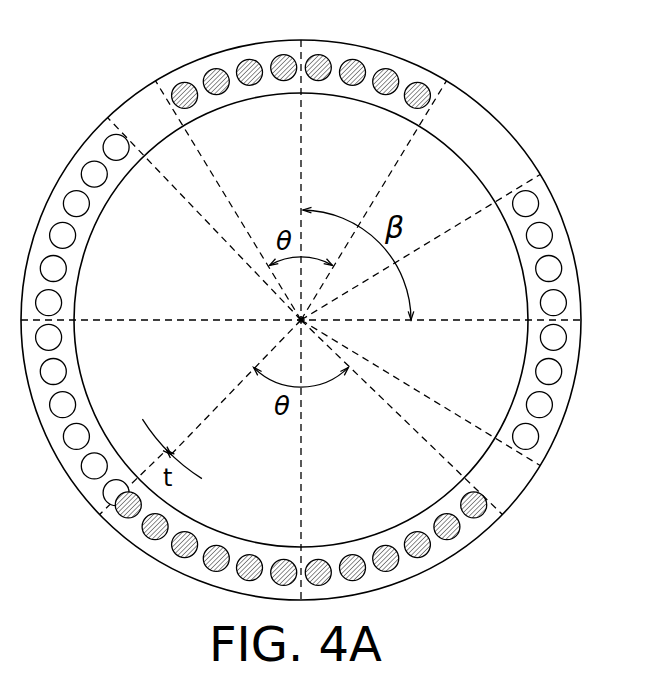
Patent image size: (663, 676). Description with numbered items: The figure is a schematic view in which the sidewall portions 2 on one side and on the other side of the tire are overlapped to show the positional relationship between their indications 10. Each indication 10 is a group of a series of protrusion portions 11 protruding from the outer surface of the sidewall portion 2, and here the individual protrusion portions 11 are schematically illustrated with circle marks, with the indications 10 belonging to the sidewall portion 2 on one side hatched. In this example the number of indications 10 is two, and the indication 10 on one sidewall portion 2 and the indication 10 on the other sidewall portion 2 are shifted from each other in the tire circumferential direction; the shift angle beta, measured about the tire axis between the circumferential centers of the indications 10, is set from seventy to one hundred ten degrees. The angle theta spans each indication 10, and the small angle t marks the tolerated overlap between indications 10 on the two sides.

The sidewall portion 2 is at (574, 245).
The indication 10 is at (314, 84).
The protrusion portion 11 is at (351, 75).